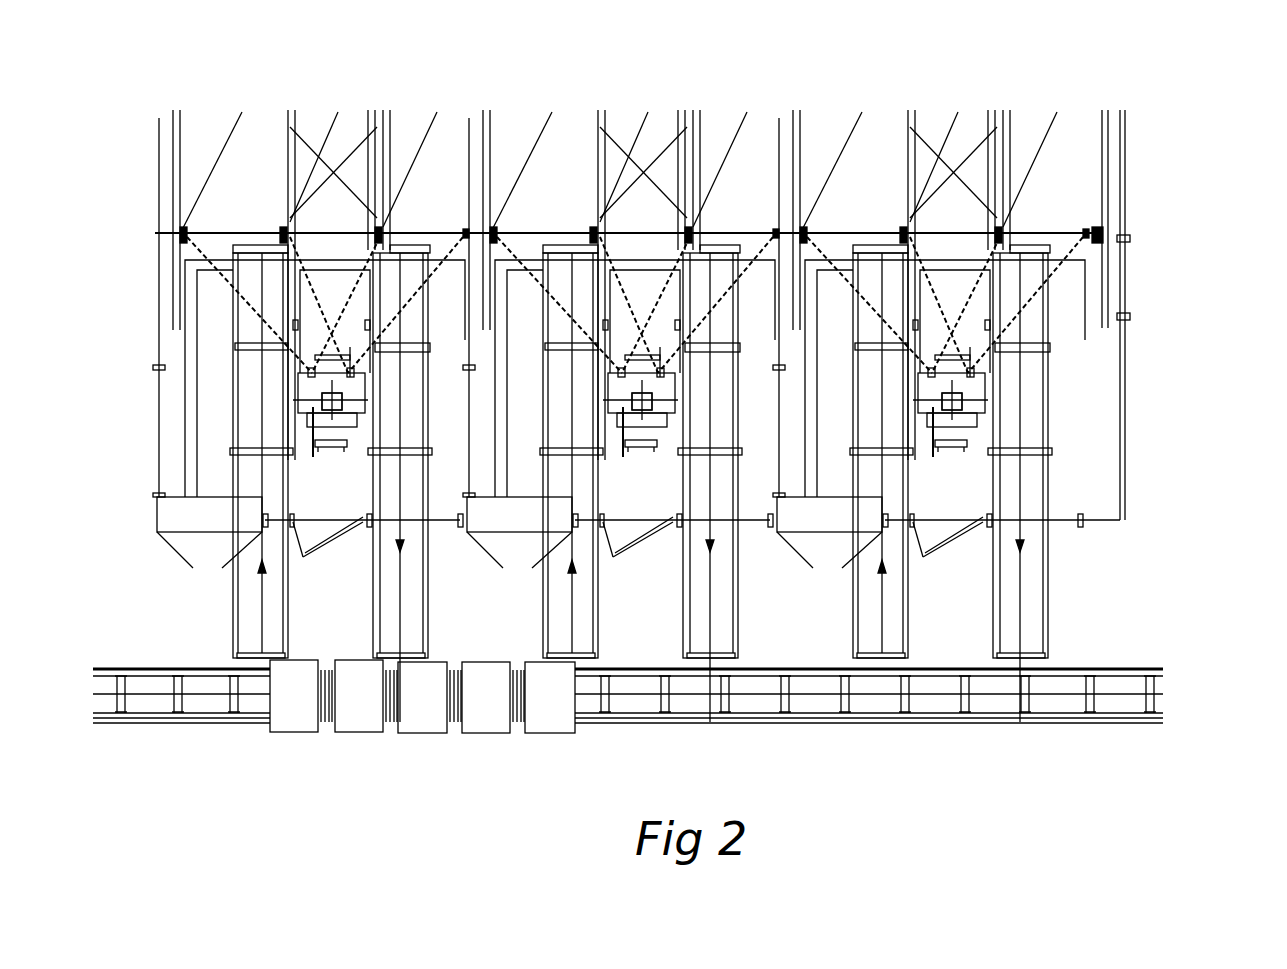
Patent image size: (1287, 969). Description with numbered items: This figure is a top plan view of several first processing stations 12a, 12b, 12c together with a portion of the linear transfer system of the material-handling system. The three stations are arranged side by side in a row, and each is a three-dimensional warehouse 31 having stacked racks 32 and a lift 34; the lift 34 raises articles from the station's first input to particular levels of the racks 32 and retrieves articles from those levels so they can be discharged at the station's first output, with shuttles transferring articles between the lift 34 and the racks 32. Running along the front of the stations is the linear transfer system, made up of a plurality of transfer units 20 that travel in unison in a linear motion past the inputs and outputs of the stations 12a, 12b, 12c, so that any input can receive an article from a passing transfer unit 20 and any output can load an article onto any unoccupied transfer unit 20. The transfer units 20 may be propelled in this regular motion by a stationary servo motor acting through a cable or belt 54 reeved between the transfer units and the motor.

The first processing station 12a is at (162, 118).
The first processing station 12b is at (490, 102).
The first processing station 12c is at (1105, 88).
The transfer unit 20 is at (300, 732).
The three-dimensional warehouse 31 is at (1128, 198).
The stacked racks 32 is at (960, 148).
The lift 34 is at (343, 413).
The cable or belt 54 is at (145, 697).